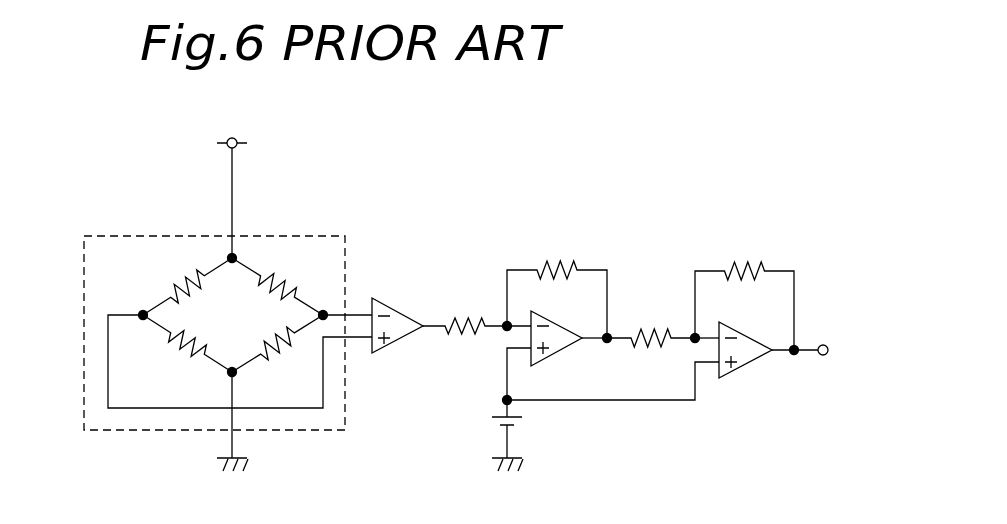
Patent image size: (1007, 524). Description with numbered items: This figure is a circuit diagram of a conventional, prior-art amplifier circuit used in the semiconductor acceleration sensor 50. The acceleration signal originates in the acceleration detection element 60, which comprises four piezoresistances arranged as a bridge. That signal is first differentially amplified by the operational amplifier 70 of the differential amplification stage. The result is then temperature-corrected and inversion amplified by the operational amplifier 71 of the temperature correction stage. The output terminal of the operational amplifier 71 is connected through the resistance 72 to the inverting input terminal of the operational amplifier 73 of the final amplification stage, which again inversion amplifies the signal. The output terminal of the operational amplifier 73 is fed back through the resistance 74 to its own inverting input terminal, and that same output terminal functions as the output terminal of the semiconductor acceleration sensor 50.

The semiconductor acceleration sensor 50 is at (491, 227).
The acceleration detection element 60 is at (321, 236).
The operational amplifier 70 is at (401, 342).
The operational amplifier 71 is at (566, 349).
The resistance 72 is at (650, 332).
The operational amplifier 73 is at (752, 359).
The resistance 74 is at (740, 266).